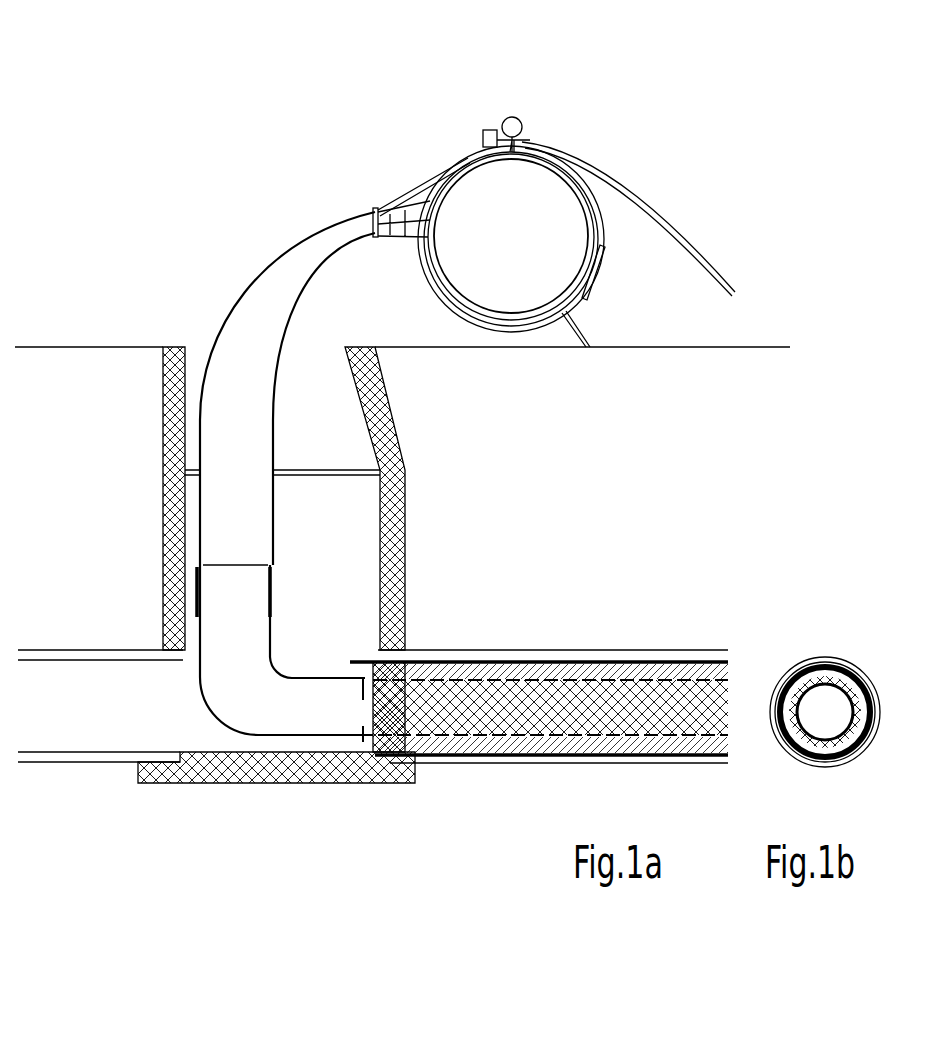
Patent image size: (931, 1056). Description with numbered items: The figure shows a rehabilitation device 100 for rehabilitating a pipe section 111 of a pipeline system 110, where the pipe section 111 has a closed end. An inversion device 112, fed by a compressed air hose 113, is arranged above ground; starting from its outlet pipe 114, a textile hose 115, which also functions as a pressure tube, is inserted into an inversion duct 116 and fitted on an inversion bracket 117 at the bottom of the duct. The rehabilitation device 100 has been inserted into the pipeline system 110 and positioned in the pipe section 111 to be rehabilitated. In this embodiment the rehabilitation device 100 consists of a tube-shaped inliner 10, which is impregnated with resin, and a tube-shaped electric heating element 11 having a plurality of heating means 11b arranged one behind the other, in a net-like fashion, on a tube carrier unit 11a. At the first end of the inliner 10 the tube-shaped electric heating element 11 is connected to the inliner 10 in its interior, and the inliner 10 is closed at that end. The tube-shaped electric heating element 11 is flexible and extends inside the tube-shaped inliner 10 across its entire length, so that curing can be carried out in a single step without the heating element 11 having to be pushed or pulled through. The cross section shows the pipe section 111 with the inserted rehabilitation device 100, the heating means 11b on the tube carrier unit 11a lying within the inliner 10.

In FIG. 1A, the rehabilitation device 100 is at (505, 880).
In FIG. 1B, the rehabilitation device 100 is at (858, 585).
In FIG. 1A, the tube-shaped inliner 10 is at (512, 680).
In FIG. 1B, the tube-shaped inliner 10 is at (875, 732).
In FIG. 1A, the tube-shaped electric heating element 11 is at (650, 690).
In FIG. 1B, the tube-shaped electric heating element 11 is at (846, 530).
In FIG. 1A, the tube carrier unit 11a is at (669, 736).
In FIG. 1B, the tube carrier unit 11a is at (806, 660).
In FIG. 1A, the heating means 11b is at (691, 756).
In FIG. 1B, the heating means 11b is at (826, 660).
In FIG. 1A, the pipe section 111 is at (607, 662).
In FIG. 1B, the pipe section 111 is at (855, 672).
In FIG. 1A, the pipeline system 110 is at (213, 738).
In FIG. 1A, the inversion device 112 is at (527, 212).
In FIG. 1A, the compressed air hose 113 is at (620, 185).
In FIG. 1A, the outlet pipe 114 is at (392, 200).
In FIG. 1A, the textile hose 115 is at (235, 410).
In FIG. 1A, the inversion duct 116 is at (407, 510).
In FIG. 1A, the inversion bracket 117 is at (218, 677).